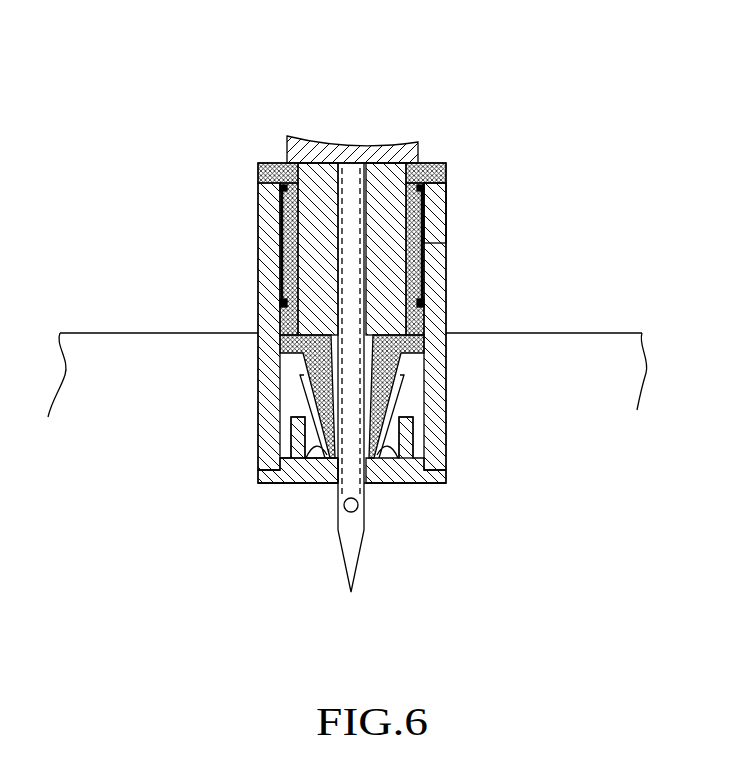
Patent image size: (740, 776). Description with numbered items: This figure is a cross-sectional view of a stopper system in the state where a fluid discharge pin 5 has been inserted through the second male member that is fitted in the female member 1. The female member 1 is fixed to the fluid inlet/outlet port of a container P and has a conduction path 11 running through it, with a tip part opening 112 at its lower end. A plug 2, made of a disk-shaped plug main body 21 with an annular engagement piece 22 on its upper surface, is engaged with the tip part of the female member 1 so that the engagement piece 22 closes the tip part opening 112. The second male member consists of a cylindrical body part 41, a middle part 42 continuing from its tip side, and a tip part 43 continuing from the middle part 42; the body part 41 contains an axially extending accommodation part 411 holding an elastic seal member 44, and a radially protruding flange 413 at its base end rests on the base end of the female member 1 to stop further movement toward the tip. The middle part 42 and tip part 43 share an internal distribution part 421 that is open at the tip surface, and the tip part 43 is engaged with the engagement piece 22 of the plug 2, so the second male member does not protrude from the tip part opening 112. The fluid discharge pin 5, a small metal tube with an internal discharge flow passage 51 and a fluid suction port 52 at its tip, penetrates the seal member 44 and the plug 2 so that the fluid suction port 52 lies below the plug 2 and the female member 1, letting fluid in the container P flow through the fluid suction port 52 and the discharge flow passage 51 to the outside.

The female member 1 is at (447, 195).
The conduction path 11 is at (449, 228).
The tip part opening 112 is at (290, 484).
The plug 2 is at (425, 484).
The plug main body 21 is at (393, 486).
The engagement piece 22 is at (336, 485).
The body part 41 is at (425, 272).
The accommodation part 411 is at (290, 235).
The flange 413 is at (423, 162).
The middle part 42 is at (400, 373).
The distribution part 421 is at (300, 392).
The tip part 43 is at (412, 440).
The seal member 44 is at (286, 288).
The fluid discharge pin 5 is at (339, 185).
The discharge flow passage 51 is at (298, 357).
The fluid suction port 52 is at (344, 507).
The container P is at (575, 334).